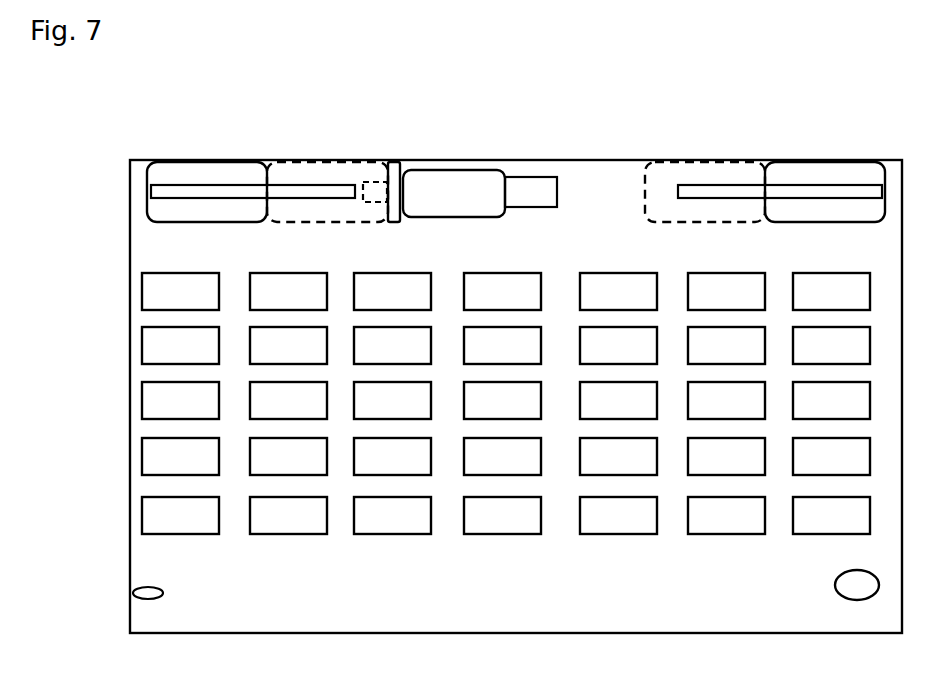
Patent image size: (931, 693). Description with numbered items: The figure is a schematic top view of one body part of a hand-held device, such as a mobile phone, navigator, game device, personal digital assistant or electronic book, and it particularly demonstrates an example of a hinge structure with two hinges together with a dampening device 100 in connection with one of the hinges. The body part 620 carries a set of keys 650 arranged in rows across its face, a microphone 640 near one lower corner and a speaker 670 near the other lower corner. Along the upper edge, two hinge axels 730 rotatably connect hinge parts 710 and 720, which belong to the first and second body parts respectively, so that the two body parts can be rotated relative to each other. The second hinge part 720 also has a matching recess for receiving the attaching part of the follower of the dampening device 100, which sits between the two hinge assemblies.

The dampening device 100 is at (467, 170).
The second body part 620 is at (97, 159).
The microphone 640 is at (143, 600).
The set of keys 650 is at (163, 300).
The speaker 670 is at (860, 595).
The hinge part 710 is at (207, 170).
The second hinge part 720 is at (353, 170).
The hinge axel 730 is at (277, 188).